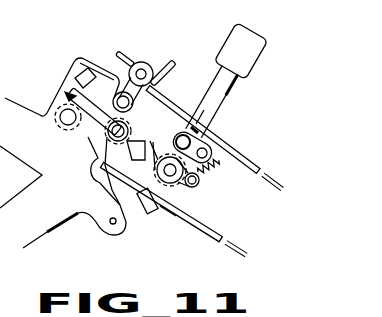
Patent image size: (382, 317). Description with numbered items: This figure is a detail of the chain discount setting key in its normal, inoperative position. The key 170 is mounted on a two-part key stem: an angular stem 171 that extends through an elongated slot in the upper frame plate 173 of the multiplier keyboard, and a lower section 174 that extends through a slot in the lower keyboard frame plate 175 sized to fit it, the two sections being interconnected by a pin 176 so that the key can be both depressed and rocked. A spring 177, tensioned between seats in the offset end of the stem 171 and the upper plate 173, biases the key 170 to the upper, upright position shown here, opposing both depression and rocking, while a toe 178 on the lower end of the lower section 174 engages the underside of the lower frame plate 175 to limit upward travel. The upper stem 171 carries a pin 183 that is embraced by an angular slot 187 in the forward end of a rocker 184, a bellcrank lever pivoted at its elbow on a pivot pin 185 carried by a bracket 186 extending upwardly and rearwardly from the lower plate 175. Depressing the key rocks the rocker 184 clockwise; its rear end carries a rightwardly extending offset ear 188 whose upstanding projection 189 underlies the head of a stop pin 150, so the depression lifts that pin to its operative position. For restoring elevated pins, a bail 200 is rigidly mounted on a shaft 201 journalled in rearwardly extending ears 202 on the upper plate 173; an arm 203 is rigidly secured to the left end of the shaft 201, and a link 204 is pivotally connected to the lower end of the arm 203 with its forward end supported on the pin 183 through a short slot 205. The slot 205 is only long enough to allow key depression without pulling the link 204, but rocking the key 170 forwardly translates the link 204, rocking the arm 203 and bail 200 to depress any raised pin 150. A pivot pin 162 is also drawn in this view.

The stop pin 150 is at (101, 64).
The pivot pin 162 is at (62, 124).
The key 170 is at (230, 35).
The angular stem 171 is at (236, 91).
The upper frame plate 173 is at (249, 161).
The lower section 174 is at (150, 208).
The lower keyboard frame plate 175 is at (229, 222).
The pin 176 is at (180, 181).
The spring 177 is at (226, 168).
The toe 178 is at (168, 218).
The pin 183 is at (202, 118).
The rocker 184 is at (96, 110).
The pivot pin 185 is at (108, 133).
The bracket 186 is at (96, 163).
The angular slot 187 is at (207, 147).
The offset ear 188 is at (49, 100).
The upstanding projection 189 is at (80, 90).
The bail 200 is at (121, 47).
The shaft 201 is at (141, 70).
The ears 202 is at (163, 70).
The arm 203 is at (158, 86).
The link 204 is at (143, 117).
The short slot 205 is at (181, 134).